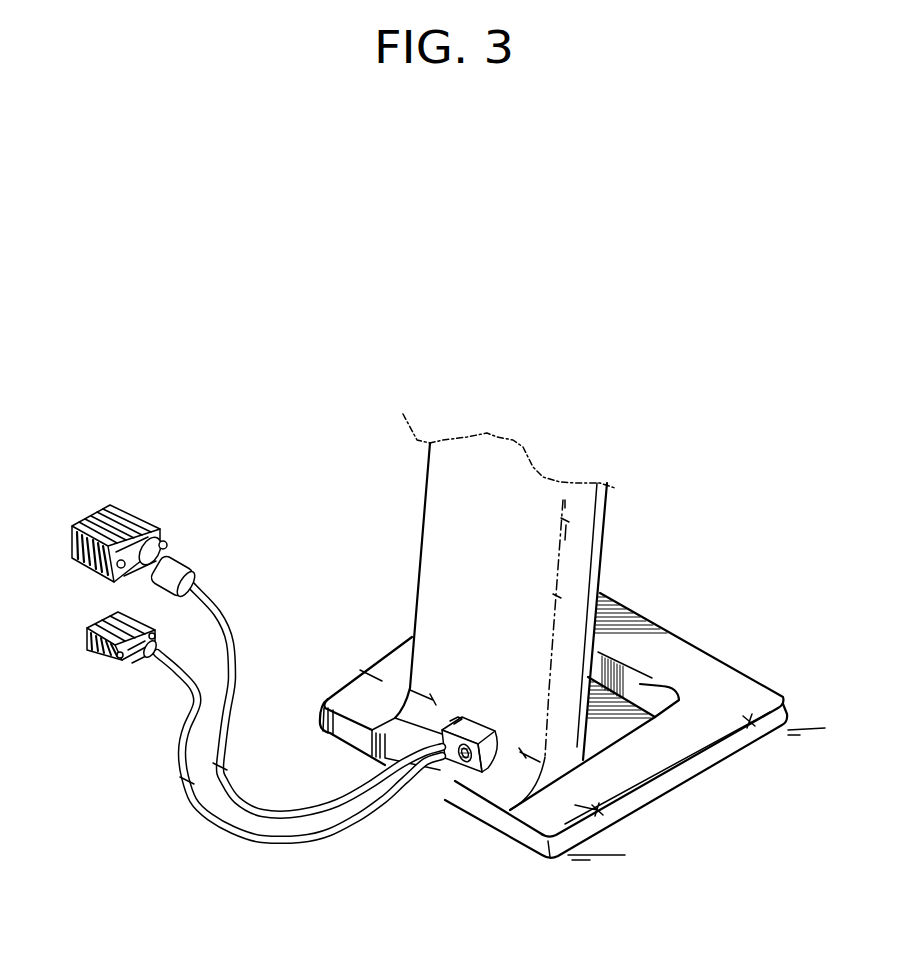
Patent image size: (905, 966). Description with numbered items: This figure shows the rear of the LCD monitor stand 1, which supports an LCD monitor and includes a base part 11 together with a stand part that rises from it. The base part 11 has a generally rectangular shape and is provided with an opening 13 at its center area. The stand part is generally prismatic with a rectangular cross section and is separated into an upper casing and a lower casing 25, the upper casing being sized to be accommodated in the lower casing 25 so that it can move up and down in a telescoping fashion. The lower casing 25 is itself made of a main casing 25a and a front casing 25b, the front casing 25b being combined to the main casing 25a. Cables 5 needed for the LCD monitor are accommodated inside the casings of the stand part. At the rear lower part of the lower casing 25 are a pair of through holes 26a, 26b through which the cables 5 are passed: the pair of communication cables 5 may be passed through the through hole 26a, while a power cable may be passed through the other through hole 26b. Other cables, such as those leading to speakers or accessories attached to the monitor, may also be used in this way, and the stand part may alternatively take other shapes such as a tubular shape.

The LCD monitor stand 1 is at (272, 345).
The cables 5 is at (222, 684).
The base part 11 is at (630, 768).
The opening 13 is at (640, 685).
The lower casing 25 is at (603, 412).
The main casing 25a is at (490, 468).
The front casing 25b is at (638, 514).
The through hole 26a is at (444, 745).
The through hole 26b is at (462, 762).